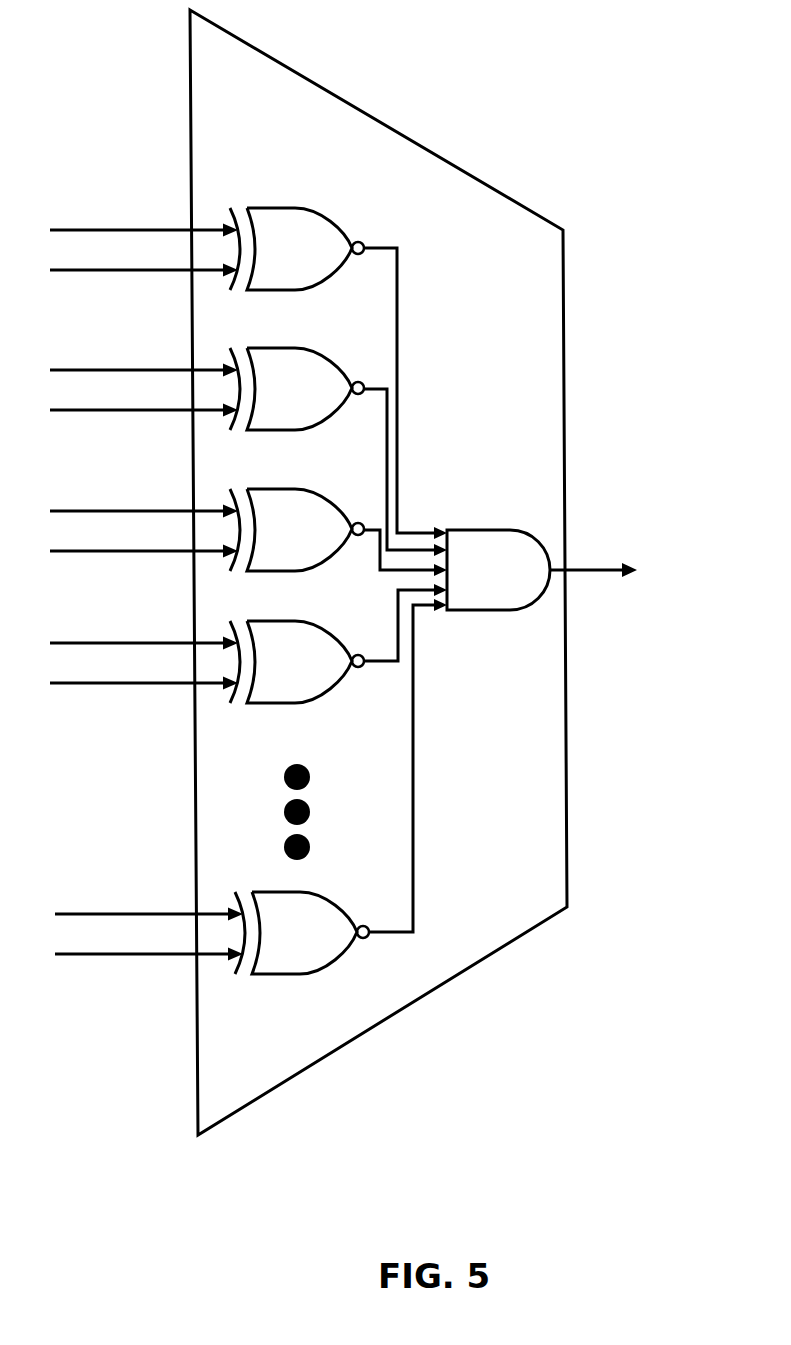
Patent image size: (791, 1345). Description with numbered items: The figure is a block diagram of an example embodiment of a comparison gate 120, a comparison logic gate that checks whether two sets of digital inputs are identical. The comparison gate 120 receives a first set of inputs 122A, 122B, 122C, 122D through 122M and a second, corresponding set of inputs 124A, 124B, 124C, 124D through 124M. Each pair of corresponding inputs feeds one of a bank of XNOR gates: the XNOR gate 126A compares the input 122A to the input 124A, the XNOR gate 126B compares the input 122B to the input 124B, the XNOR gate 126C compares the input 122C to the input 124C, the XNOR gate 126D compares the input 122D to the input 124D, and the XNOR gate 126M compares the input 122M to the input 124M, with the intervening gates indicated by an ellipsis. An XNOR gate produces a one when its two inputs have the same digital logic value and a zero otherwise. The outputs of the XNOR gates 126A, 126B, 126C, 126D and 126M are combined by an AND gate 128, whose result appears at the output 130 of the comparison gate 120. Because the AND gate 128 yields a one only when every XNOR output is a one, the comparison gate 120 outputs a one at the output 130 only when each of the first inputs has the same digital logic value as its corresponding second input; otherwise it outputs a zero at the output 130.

The comparison gate 120 is at (499, 192).
The input 122A is at (76, 229).
The input 124A is at (167, 272).
The XNOR gate 126A is at (323, 261).
The input 122B is at (144, 354).
The input 124B is at (144, 426).
The XNOR gate 126B is at (338, 452).
The input 122C is at (144, 495).
The input 124C is at (144, 567).
The XNOR gate 126C is at (338, 532).
The input 122D is at (144, 627).
The input 124D is at (144, 699).
The XNOR gate 126D is at (338, 643).
The input 122M is at (149, 898).
The input 124M is at (149, 970).
The XNOR gate 126M is at (341, 786).
The AND gate 128 is at (521, 582).
The output 130 is at (590, 568).